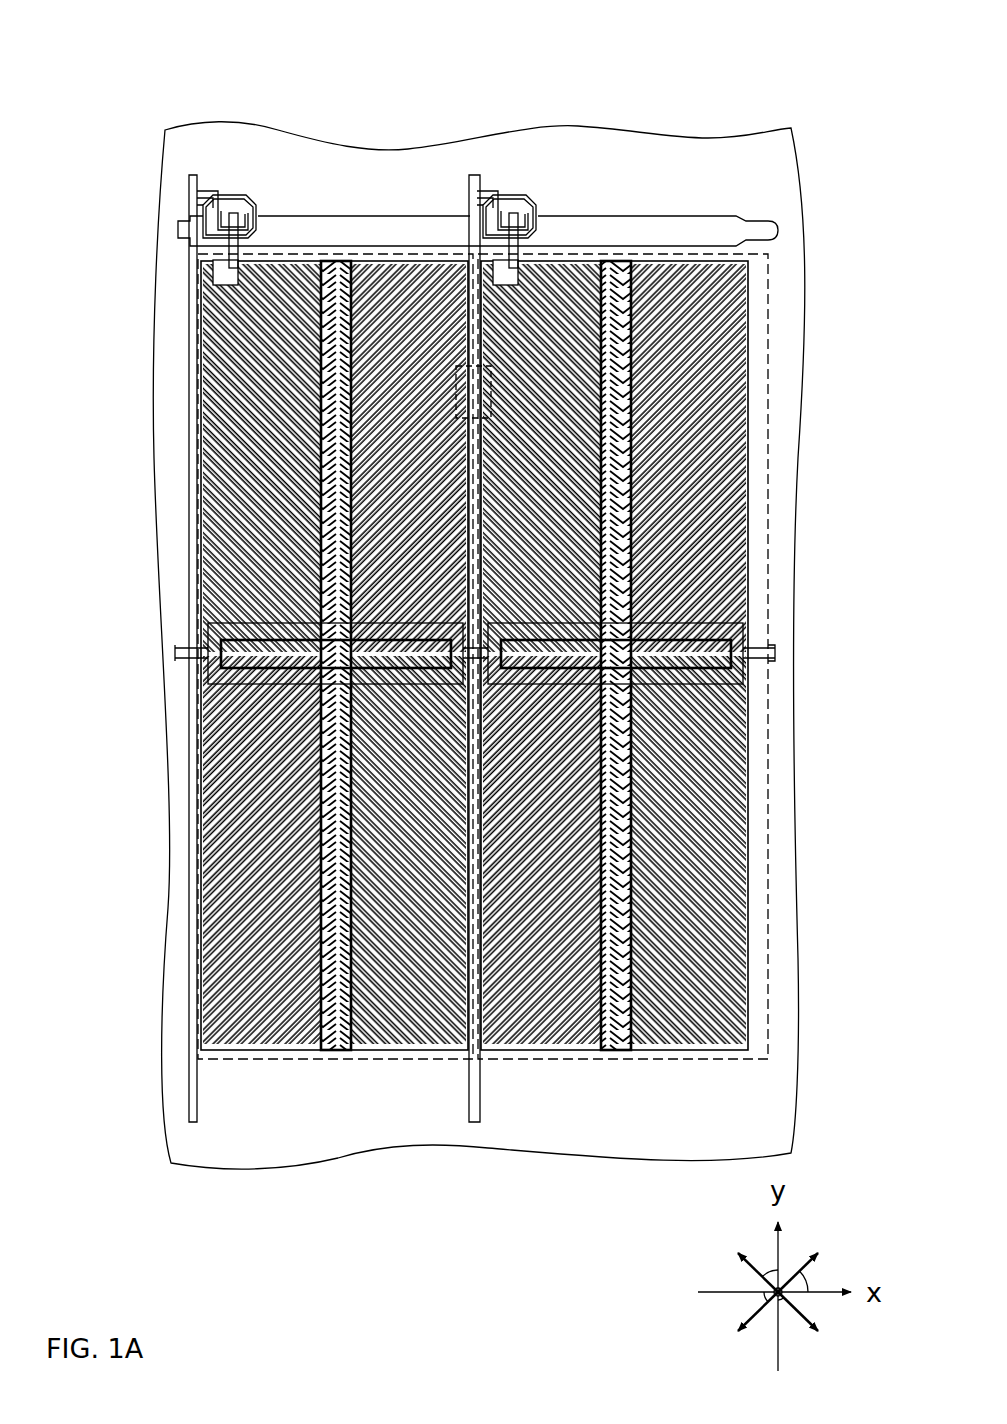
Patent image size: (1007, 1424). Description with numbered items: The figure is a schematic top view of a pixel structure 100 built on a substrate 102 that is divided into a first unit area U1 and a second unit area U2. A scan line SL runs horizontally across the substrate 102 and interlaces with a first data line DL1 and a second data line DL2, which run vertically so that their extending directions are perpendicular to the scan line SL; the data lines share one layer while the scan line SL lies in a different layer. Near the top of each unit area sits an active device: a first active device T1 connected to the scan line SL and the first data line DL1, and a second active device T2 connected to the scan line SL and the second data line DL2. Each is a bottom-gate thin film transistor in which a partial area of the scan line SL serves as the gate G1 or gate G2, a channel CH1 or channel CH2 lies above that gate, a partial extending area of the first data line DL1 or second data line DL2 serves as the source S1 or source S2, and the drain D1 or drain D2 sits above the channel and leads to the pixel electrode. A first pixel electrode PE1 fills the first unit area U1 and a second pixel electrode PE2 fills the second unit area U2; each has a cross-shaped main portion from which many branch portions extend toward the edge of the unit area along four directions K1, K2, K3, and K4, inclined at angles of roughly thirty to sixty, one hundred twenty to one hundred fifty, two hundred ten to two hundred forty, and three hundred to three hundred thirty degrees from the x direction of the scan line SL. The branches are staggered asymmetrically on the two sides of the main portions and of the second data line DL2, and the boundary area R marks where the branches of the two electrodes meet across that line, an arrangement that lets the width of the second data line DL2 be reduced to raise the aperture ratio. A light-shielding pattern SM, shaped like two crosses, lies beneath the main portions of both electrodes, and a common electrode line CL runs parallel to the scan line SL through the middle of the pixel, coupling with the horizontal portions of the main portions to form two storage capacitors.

The pixel structure 100 is at (102, 1226).
The substrate 102 is at (748, 183).
The first data line DL1 is at (185, 167).
The second data line DL2 is at (465, 167).
The scan line SL is at (753, 225).
The common electrode line CL is at (767, 645).
The first active device T1 is at (347, 43).
The second active device T2 is at (628, 43).
The source S1 is at (209, 200).
The source S2 is at (489, 200).
The channel CH1 is at (222, 192).
The channel CH2 is at (502, 192).
The gate G1 is at (250, 192).
The gate G2 is at (530, 192).
The drain D1 is at (258, 217).
The drain D2 is at (538, 217).
The first pixel electrode PE1 is at (383, 250).
The second pixel electrode PE2 is at (640, 250).
The boundary area R is at (456, 368).
The first unit area U1 is at (280, 1050).
The second unit area U2 is at (585, 1050).
The light-shielding pattern SM is at (315, 840).
The K1 direction K1 is at (205, 440).
The K2 direction K2 is at (740, 437).
The K3 direction K3 is at (742, 1328).
The K4 direction K4 is at (814, 1328).